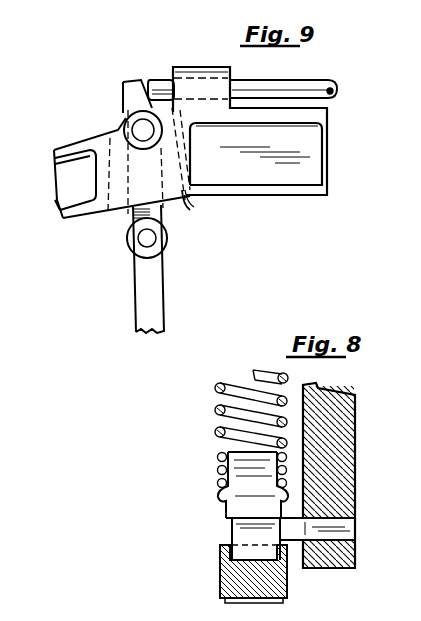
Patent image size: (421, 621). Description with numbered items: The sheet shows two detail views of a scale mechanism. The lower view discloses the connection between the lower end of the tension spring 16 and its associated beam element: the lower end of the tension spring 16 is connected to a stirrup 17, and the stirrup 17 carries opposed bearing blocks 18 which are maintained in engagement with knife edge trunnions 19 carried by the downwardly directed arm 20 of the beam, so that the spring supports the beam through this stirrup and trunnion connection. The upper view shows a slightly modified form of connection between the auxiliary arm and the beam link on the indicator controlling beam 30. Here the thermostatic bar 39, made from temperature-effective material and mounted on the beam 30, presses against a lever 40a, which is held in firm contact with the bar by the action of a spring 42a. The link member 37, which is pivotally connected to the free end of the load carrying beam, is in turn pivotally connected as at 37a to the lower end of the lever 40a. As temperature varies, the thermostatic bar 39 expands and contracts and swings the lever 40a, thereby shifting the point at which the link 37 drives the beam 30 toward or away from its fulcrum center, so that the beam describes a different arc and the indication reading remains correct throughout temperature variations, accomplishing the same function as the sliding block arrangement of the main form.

In FIG. 9, the lever 40a is at (128, 95).
In FIG. 9, the thermostatic bar 39 is at (310, 86).
In FIG. 9, the indicator controlling beam 30 is at (288, 192).
In FIG. 9, the spring 42a is at (184, 208).
In FIG. 9, the pivot connection 37a is at (142, 238).
In FIG. 9, the link member 37 is at (135, 288).
In FIG. 8, the tension spring 16 is at (226, 409).
In FIG. 8, the stirrup 17 is at (230, 511).
In FIG. 8, the knife edge trunnions 19 is at (236, 522).
In FIG. 8, the downwardly directed arm 20 is at (340, 435).
In FIG. 8, the bearing blocks 18 is at (286, 578).